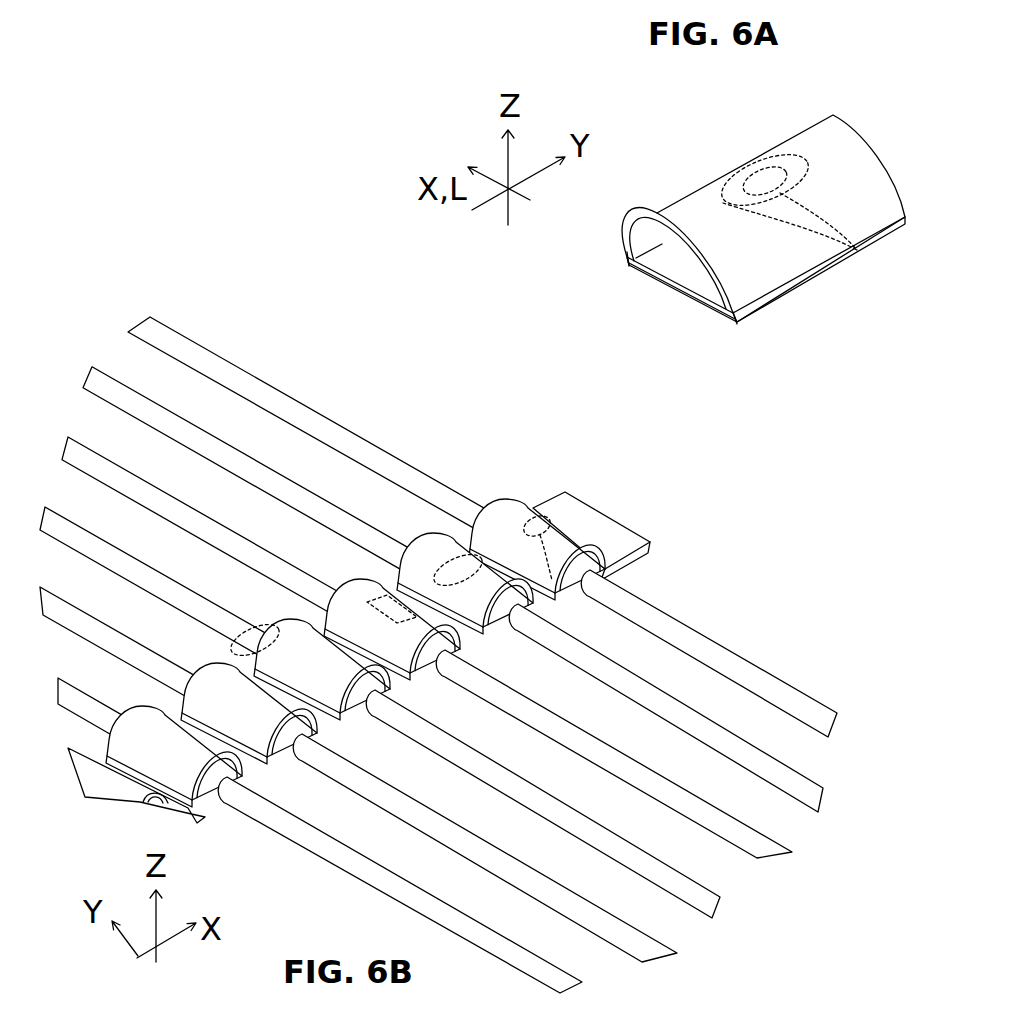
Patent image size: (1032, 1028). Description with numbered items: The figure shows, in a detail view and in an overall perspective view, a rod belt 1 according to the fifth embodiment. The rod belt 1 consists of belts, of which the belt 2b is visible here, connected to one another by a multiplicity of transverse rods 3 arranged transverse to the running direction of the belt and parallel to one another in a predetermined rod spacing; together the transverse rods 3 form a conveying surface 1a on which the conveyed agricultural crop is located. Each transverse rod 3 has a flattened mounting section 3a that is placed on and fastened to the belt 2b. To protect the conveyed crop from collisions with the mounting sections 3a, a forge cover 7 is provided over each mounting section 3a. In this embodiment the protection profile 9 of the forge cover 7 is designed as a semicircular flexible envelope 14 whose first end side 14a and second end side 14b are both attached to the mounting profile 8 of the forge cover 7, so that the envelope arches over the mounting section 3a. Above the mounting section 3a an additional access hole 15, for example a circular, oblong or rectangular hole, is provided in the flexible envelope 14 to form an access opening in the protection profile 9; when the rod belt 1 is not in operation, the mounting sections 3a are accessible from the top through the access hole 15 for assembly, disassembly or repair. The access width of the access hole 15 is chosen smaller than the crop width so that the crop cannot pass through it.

In FIG. 6B, the rod belt 1 is at (455, 631).
In FIG. 6B, the conveying surface 1a is at (133, 372).
In FIG. 6B, the transverse rod 3 is at (455, 546).
In FIG. 6B, the mounting section 3a is at (592, 572).
In FIG. 6B, the belt 2b is at (612, 528).
In FIG. 6A, the forge cover 7 is at (726, 186).
In FIG. 6B, the forge cover 7 is at (501, 505).
In FIG. 6A, the mounting profile 8 is at (700, 286).
In FIG. 6A, the protection profile 9 is at (764, 186).
In FIG. 6A, the flexible envelope 14 is at (827, 137).
In FIG. 6A, the first end side 14a is at (628, 258).
In FIG. 6A, the second end side 14b is at (737, 323).
In FIG. 6A, the access hole 15 is at (866, 248).
In FIG. 6B, the access hole 15 is at (390, 576).